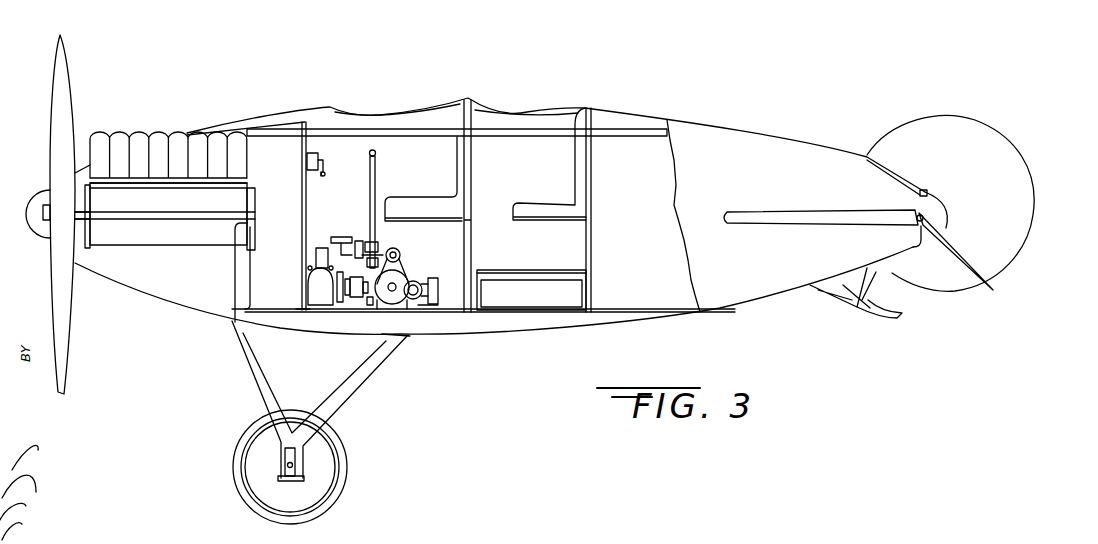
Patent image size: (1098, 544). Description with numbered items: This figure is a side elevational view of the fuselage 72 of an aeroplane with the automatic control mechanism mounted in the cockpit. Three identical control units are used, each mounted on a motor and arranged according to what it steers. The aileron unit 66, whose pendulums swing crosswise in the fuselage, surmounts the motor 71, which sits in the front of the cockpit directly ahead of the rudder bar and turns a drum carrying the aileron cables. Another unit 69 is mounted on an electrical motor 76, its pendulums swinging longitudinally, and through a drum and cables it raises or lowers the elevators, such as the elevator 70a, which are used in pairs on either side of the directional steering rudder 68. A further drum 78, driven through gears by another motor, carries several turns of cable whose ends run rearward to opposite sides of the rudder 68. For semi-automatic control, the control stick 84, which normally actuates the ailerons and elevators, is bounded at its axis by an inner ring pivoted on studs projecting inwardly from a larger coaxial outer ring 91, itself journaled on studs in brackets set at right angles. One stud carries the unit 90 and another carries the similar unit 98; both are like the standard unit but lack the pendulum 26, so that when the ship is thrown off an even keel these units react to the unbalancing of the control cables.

The pendulum 26 is at (303, 314).
The aileron control unit casing 66 is at (308, 270).
The directional steering rudder 68 is at (985, 152).
The elevator control unit casing 69 is at (401, 252).
The elevator 70a is at (962, 257).
The motor 71 is at (320, 306).
The fuselage 72 is at (748, 162).
The electrical motor 76 is at (391, 302).
The drum 78 is at (417, 291).
The control stick 84 is at (375, 182).
The semi-automatic control unit 90 is at (342, 237).
The outer ring 91 is at (379, 254).
The semi-automatic control unit 98 is at (364, 243).